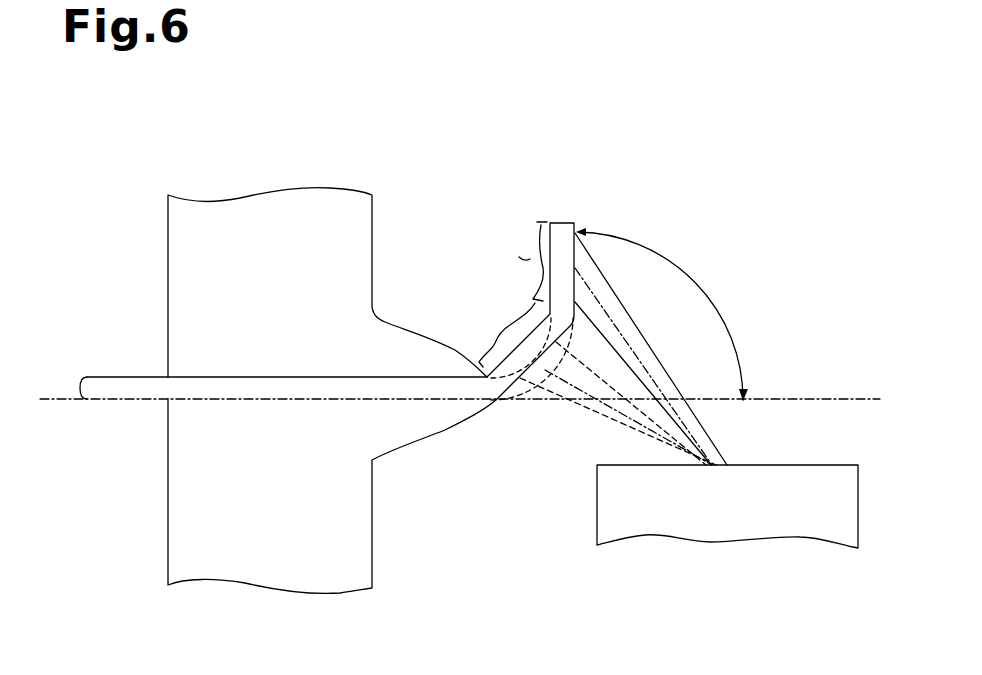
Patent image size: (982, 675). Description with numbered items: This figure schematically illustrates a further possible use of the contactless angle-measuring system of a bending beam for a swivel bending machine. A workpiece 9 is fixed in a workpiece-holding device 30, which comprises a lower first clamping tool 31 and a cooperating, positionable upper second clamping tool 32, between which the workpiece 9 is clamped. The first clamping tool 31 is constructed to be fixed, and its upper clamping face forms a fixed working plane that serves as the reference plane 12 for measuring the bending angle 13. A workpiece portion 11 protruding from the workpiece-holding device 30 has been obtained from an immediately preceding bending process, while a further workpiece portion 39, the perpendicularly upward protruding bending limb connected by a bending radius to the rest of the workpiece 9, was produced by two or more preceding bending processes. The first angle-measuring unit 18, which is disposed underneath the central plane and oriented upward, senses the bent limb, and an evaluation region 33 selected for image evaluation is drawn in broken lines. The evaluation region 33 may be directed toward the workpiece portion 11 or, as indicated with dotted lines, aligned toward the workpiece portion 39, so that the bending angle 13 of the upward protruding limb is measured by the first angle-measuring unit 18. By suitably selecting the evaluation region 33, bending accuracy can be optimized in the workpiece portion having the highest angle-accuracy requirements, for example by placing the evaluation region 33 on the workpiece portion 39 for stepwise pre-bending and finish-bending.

The workpiece 9 is at (113, 385).
The workpiece portion 11 is at (488, 312).
The reference plane 12 is at (52, 399).
The bending angle 13 is at (653, 244).
The first angle-measuring unit 18 is at (785, 520).
The workpiece-holding device 30 is at (281, 347).
The first clamping tool 31 is at (223, 537).
The second clamping tool 32 is at (200, 222).
The evaluation region 33 is at (672, 383).
The workpiece portion 39 is at (506, 252).